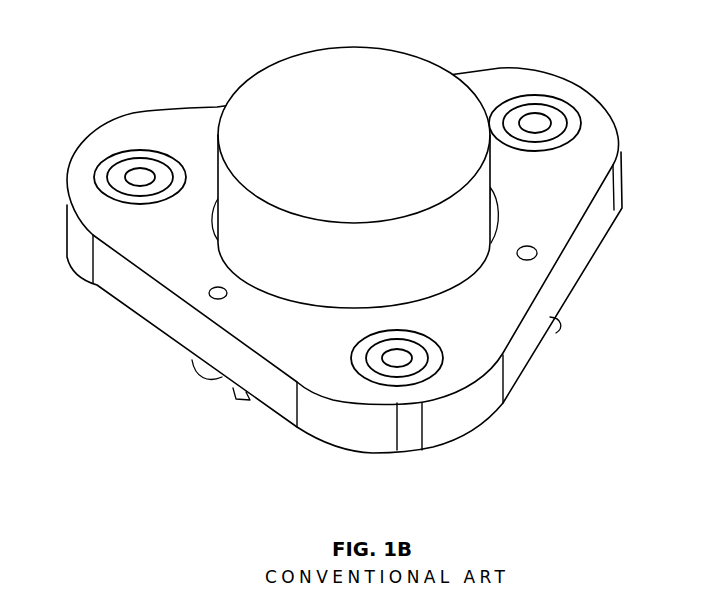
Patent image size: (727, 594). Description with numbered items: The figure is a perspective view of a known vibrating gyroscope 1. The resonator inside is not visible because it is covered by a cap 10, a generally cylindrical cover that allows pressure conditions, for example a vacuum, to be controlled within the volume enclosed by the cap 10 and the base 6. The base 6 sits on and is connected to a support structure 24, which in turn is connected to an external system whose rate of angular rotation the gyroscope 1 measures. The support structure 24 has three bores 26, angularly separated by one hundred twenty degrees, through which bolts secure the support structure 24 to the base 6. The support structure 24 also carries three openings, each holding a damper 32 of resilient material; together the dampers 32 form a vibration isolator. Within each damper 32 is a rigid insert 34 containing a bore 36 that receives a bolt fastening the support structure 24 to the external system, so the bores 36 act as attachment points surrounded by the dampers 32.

The vibrating gyroscope 1 is at (76, 50).
The base 6 is at (195, 368).
The cap 10 is at (382, 80).
The support structure 24 is at (558, 167).
The bores 26 is at (537, 253).
The damper 32 is at (98, 180).
The insert 34 is at (118, 167).
The bore 36 is at (144, 176).